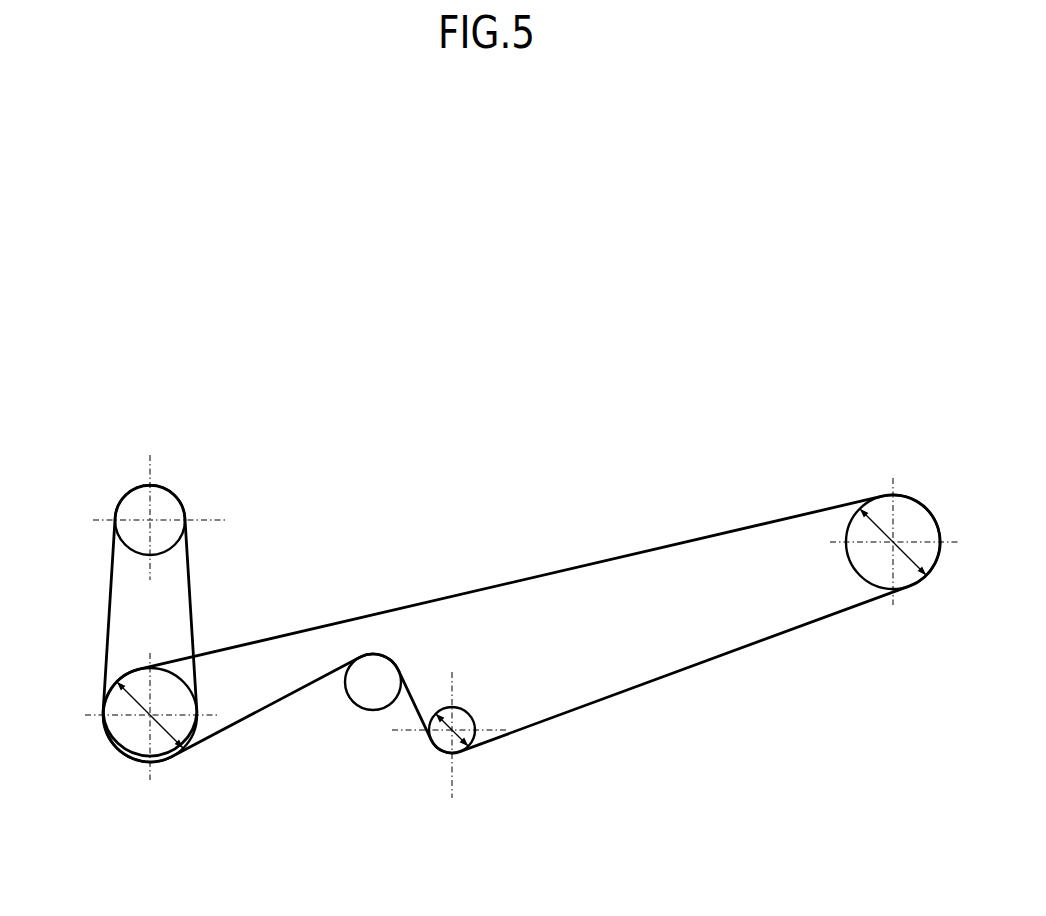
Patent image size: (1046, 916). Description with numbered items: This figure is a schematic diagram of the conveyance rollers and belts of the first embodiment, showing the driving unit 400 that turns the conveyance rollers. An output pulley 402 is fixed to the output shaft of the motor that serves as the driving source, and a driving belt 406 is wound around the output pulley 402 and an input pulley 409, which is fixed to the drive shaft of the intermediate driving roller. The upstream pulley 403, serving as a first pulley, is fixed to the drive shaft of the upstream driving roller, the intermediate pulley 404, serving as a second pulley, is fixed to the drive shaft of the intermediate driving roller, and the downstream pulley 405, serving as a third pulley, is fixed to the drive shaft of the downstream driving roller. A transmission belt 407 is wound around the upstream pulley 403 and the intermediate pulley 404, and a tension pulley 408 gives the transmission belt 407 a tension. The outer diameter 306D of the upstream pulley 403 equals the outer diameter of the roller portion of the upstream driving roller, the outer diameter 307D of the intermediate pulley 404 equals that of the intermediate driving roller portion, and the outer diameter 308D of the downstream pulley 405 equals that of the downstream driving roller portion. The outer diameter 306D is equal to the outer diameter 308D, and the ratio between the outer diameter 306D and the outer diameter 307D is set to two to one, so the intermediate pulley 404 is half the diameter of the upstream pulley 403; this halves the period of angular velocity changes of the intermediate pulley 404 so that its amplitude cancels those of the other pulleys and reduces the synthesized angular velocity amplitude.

The driving unit 400 is at (452, 433).
The output pulley 402 is at (157, 503).
The upstream pulley 403 is at (131, 734).
The input pulley 409 is at (115, 730).
The intermediate pulley 404 is at (440, 738).
The downstream pulley 405 is at (882, 512).
The driving belt 406 is at (192, 597).
The transmission belt 407 is at (448, 598).
The tension pulley 408 is at (365, 698).
The outer diameter 306D is at (160, 733).
The outer diameter 307D is at (457, 708).
The outer diameter 308D is at (875, 525).